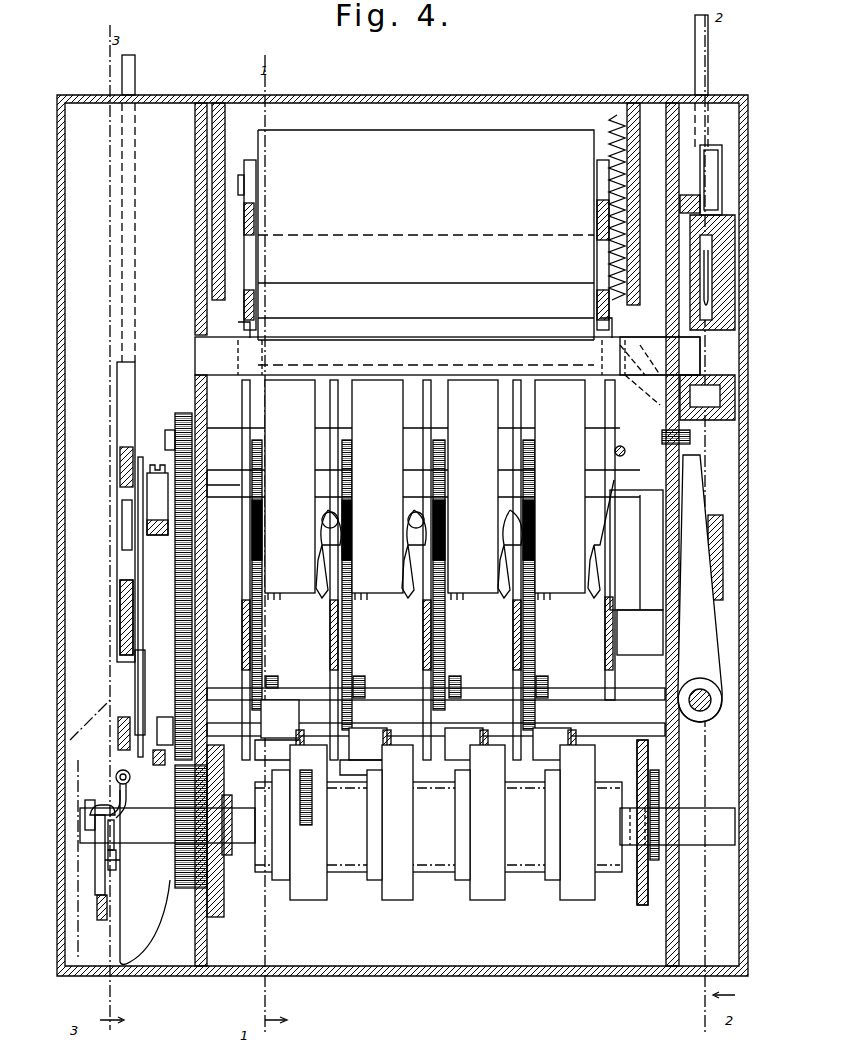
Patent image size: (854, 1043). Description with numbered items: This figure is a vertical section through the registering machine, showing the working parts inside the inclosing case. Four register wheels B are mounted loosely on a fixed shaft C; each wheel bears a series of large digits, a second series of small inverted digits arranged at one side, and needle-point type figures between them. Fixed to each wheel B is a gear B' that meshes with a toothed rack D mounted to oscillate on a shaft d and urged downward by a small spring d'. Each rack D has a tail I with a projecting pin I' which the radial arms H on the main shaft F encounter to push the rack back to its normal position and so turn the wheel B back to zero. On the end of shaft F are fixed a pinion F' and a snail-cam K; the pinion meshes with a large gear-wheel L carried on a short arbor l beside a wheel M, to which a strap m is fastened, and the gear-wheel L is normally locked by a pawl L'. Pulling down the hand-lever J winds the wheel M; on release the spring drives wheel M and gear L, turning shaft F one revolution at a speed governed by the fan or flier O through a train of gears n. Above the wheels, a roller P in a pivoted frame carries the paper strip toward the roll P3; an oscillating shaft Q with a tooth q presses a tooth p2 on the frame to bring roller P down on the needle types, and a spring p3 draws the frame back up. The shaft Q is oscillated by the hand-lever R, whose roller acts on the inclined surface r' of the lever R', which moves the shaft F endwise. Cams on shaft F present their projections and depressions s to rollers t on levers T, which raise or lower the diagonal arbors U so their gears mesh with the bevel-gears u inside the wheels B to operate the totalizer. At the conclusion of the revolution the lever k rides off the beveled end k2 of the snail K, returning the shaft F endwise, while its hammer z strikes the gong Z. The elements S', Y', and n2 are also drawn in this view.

The hand-lever J is at (136, 85).
The arbor l is at (120, 592).
The wheel M is at (143, 594).
The strap m is at (157, 500).
The gear-wheel L is at (171, 579).
The pawl L' is at (145, 707).
The snail-cam K is at (107, 797).
The hammer z is at (129, 785).
The lever k is at (95, 860).
The beveled end of snail k2 is at (114, 870).
The gong Z is at (120, 832).
The shaft F is at (351, 827).
The pinion F' is at (455, 828).
The train of gears n is at (660, 862).
The paper roll P3 is at (426, 235).
The roller P is at (426, 311).
The tooth p2 is at (256, 218).
The spring p3 is at (608, 204).
The oscillating shaft Q is at (447, 356).
The tooth q is at (238, 330).
The inclined surface r' is at (640, 373).
The toothed rack D is at (252, 632).
The gear B' is at (385, 585).
The fixed shaft C is at (232, 488).
The wheel B is at (425, 485).
The diagonal arbor U is at (452, 547).
The bevel-gear u is at (373, 517).
The shaft d is at (436, 686).
The spring d' is at (414, 682).
The tail I is at (436, 741).
The pin I' is at (416, 730).
The radial arm H is at (322, 743).
The roller t is at (436, 730).
The lever T is at (443, 760).
The cam disks S' is at (433, 822).
The cam projections or depressions s is at (305, 797).
The hand-lever R is at (717, 172).
The bracket Y' is at (719, 487).
The pin n2 is at (626, 450).
The lever R' is at (700, 588).
The fan or flier O is at (636, 572).